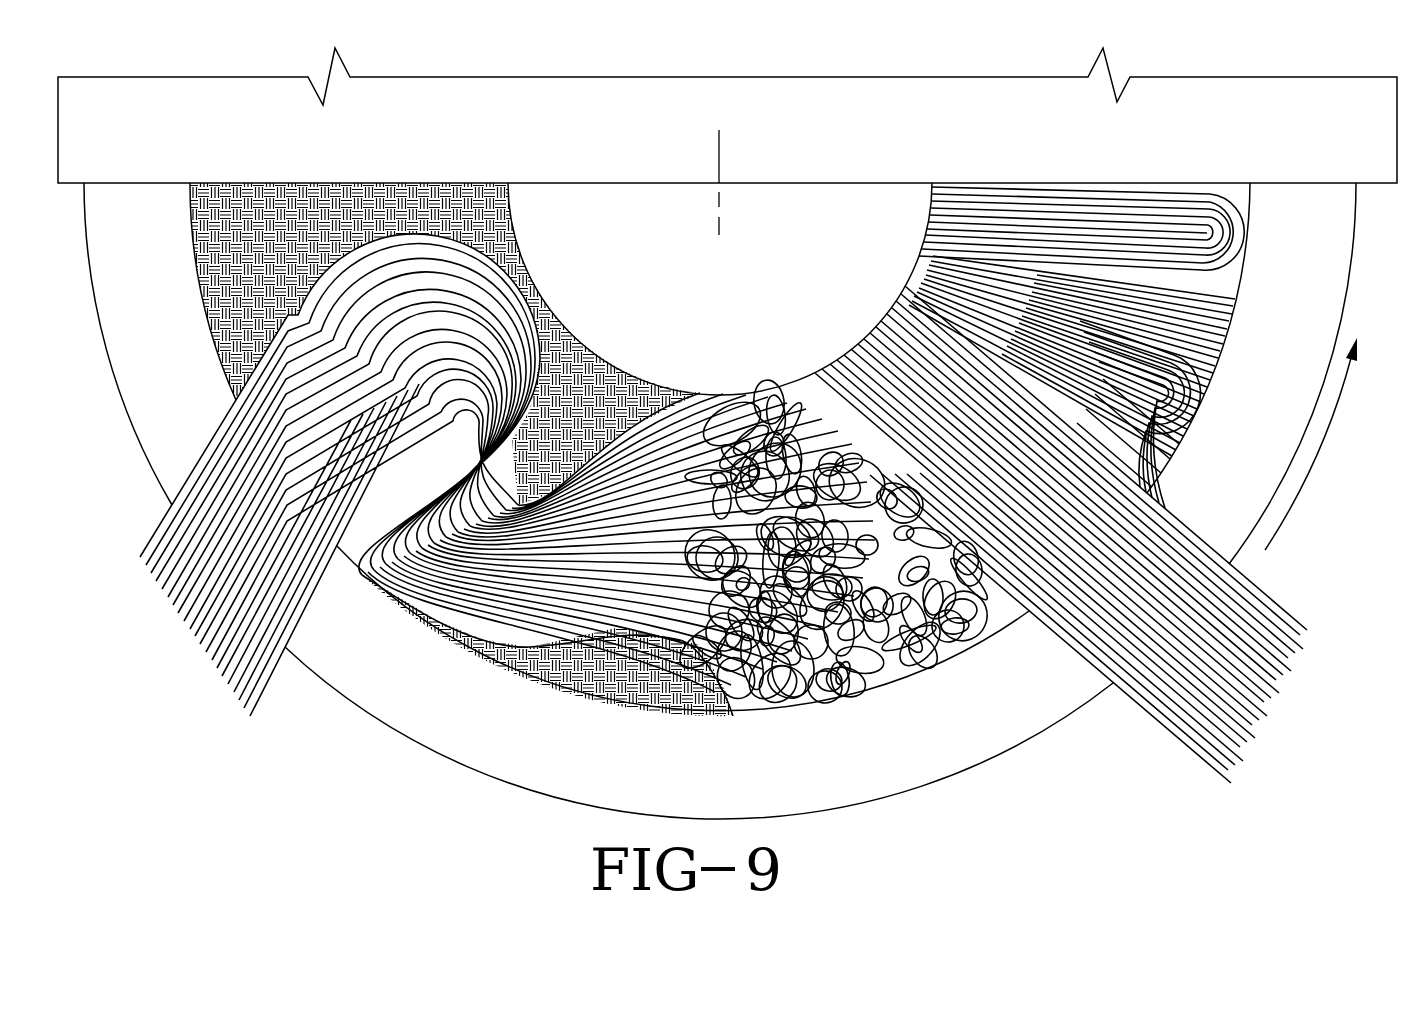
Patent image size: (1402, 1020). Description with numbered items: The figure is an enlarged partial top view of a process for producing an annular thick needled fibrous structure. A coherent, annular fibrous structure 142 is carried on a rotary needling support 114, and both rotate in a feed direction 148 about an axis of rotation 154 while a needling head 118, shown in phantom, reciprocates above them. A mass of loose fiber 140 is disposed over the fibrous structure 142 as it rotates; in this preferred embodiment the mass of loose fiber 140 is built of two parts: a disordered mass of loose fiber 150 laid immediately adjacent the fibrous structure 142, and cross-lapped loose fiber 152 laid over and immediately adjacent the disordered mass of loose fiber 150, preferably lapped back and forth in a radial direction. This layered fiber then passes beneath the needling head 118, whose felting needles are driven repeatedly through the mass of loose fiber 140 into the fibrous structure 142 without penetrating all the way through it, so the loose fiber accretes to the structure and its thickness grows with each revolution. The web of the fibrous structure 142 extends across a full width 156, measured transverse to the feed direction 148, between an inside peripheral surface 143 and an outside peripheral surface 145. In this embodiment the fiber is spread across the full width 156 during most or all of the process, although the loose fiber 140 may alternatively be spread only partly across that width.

The rotary needling support 114 is at (732, 773).
The needling head 118 is at (876, 140).
The mass of loose fiber 140 is at (325, 590).
The fibrous structure 142 is at (592, 683).
The inside peripheral surface 143 is at (912, 270).
The outside peripheral surface 145 is at (1243, 283).
The feed direction 148 is at (1279, 551).
The disordered mass of loose fiber 150 is at (253, 674).
The cross-lapped loose fiber 152 is at (1186, 722).
The axis of rotation 154 is at (722, 187).
The full width 156 is at (1208, 407).